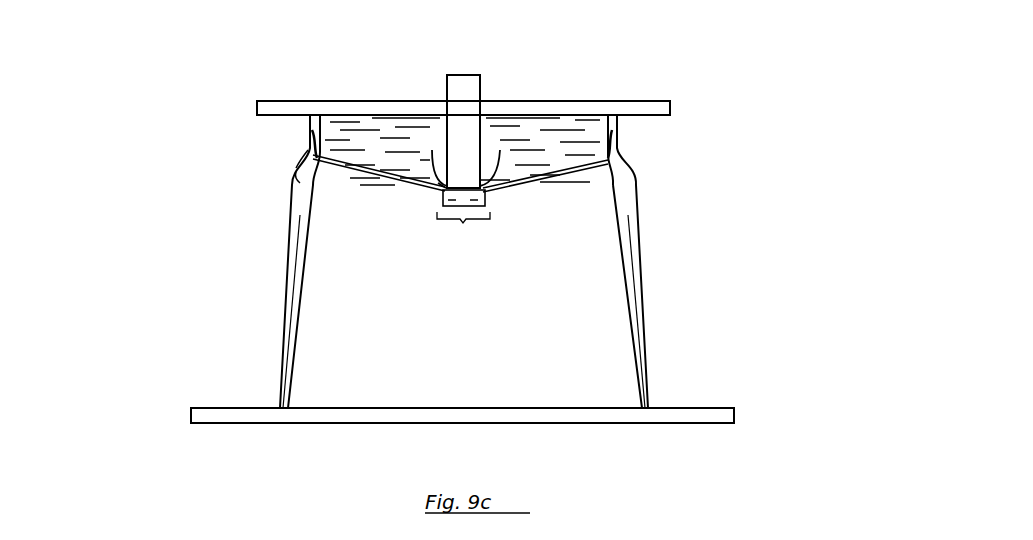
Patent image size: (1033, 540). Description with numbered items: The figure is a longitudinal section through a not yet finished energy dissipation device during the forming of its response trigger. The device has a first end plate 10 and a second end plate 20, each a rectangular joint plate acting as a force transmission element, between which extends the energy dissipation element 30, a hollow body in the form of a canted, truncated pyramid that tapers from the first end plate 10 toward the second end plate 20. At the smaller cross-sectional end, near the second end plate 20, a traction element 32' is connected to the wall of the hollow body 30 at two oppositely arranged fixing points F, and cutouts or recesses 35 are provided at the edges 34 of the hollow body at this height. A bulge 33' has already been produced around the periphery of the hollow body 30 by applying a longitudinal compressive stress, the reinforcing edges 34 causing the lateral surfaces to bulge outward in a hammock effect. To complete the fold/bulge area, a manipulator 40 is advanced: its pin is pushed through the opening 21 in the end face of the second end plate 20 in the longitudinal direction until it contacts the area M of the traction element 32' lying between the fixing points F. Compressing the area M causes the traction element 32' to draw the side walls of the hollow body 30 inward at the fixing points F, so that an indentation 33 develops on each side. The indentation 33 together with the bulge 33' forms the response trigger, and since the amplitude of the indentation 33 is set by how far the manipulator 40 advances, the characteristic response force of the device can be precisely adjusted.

The first end plate 10 is at (688, 413).
The second end plate 20 is at (630, 108).
The opening 21 is at (447, 108).
The energy dissipation element 30 is at (600, 238).
The traction element 32' is at (245, 206).
The indentation 33 is at (174, 150).
The bulge 33' is at (180, 296).
The edges 34 is at (633, 302).
The cutouts or recesses 35 is at (612, 162).
The manipulator 40 is at (460, 155).
The fixing points F is at (300, 158).
The area M is at (463, 221).